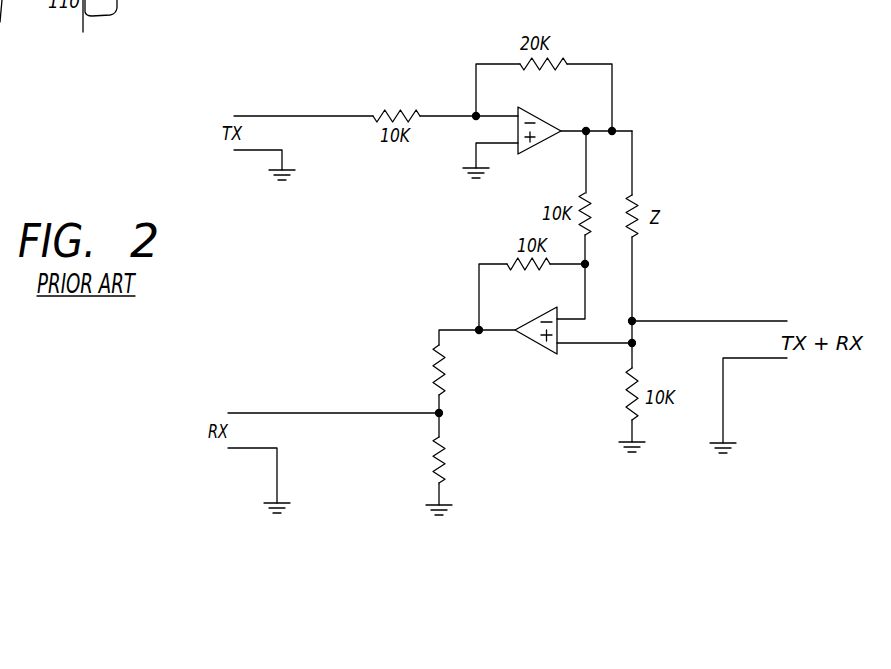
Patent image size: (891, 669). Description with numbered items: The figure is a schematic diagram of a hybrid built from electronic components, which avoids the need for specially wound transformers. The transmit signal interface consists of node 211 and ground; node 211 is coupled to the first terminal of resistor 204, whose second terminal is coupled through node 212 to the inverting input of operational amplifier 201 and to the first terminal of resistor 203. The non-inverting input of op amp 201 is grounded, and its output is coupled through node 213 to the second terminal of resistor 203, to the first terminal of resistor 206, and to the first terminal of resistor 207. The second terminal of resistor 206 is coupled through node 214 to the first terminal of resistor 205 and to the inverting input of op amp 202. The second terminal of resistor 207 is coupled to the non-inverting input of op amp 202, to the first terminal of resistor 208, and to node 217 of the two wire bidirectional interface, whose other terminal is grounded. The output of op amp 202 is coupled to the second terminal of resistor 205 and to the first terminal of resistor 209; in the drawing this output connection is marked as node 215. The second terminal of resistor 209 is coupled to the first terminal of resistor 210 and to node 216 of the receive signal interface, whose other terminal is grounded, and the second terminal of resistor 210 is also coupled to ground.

The operational amplifier 201 is at (538, 112).
The operational amplifier 202 is at (542, 354).
The resistor 203 is at (560, 62).
The resistor 204 is at (374, 115).
The resistor 205 is at (507, 260).
The resistor 206 is at (586, 199).
The resistor 207 is at (636, 197).
The resistor 208 is at (627, 381).
The resistor 209 is at (448, 370).
The resistor 210 is at (445, 455).
The node 211 is at (280, 116).
The node 212 is at (496, 64).
The node 213 is at (612, 95).
The node 214 is at (586, 250).
The output node of second amplifier 215 is at (458, 329).
The node 216 is at (288, 413).
The node 217 is at (707, 321).